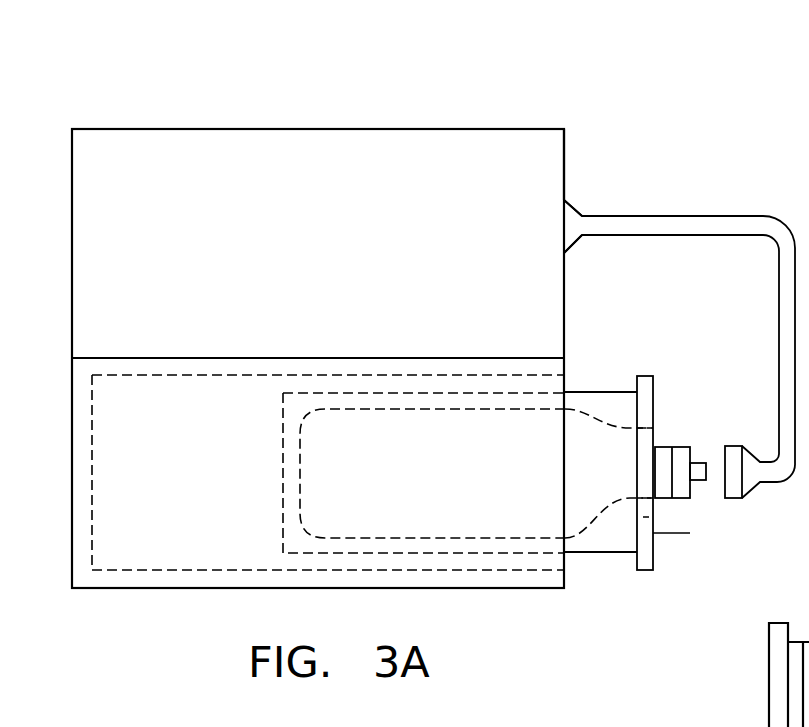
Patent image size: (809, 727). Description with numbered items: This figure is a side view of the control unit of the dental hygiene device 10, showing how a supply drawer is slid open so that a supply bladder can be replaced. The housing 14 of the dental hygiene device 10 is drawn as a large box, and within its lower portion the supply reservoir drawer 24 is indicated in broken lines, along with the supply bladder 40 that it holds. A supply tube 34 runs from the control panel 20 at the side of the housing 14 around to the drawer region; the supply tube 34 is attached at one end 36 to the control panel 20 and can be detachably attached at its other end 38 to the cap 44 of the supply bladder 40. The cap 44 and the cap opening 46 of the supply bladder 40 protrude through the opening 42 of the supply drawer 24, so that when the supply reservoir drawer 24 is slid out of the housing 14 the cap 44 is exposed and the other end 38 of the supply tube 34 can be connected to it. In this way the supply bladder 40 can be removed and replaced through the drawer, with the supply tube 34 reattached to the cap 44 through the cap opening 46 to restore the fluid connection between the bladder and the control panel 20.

The dental hygiene device 10 is at (318, 92).
The housing 14 is at (300, 290).
The control panel 20 is at (565, 148).
The supply reservoir drawer 24 is at (283, 428).
The supply tube 34 is at (723, 236).
The one end of supply tube 36 is at (565, 253).
The other end of supply tube 38 is at (727, 446).
The supply bladder 40 is at (423, 410).
The opening of supply drawer 42 is at (652, 524).
The cap 44 is at (690, 492).
The cap opening 46 is at (663, 460).